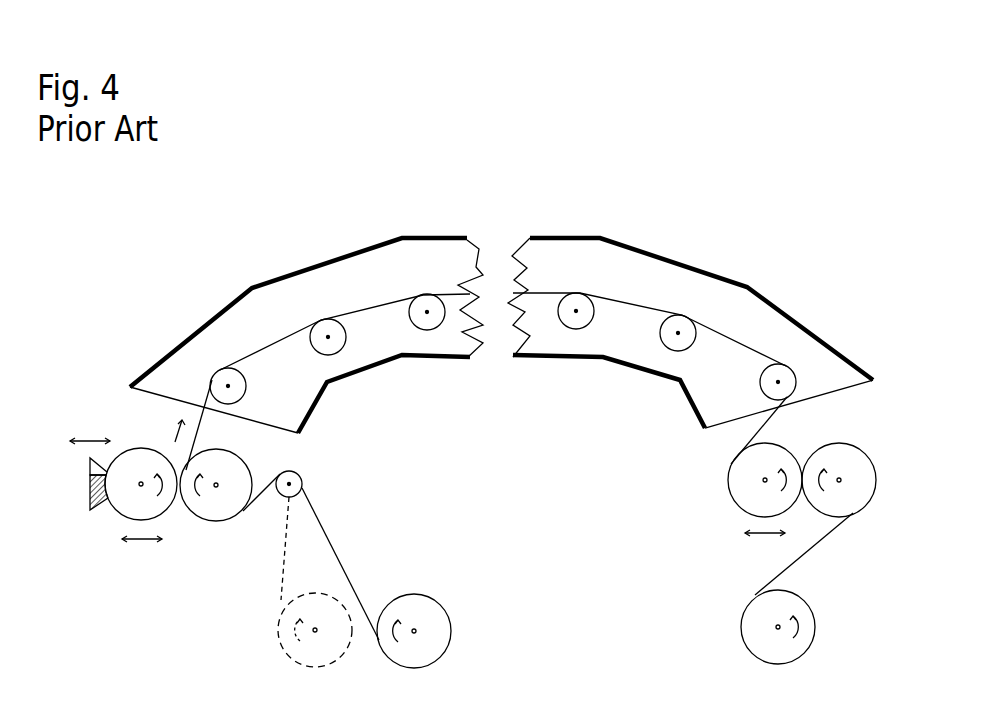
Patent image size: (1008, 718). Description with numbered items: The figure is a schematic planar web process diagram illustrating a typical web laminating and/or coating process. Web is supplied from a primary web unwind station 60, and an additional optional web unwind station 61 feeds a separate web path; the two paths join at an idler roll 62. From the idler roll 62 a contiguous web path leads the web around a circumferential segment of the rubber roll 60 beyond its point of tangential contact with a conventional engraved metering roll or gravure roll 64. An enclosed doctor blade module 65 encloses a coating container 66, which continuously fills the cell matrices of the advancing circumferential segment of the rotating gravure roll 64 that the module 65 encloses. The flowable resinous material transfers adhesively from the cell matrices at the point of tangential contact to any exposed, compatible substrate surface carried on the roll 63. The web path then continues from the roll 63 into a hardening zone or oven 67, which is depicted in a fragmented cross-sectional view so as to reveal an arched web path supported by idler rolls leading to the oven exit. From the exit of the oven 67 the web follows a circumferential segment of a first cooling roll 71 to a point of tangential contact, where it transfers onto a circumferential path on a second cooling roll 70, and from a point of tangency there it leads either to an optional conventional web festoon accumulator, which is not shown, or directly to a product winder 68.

The primary web unwind station 60 is at (414, 651).
The optional web unwind station 61 is at (315, 651).
The idler roll 62 is at (295, 471).
The roll 63 is at (216, 505).
The gravure roll 64 is at (141, 470).
The enclosed doctor blade module 65 is at (88, 467).
The coating container 66 is at (90, 493).
The oven 67 is at (505, 210).
The product winder 68 is at (778, 648).
The cooling roll (b) 70 is at (857, 479).
The cooling roll (a) 71 is at (745, 479).